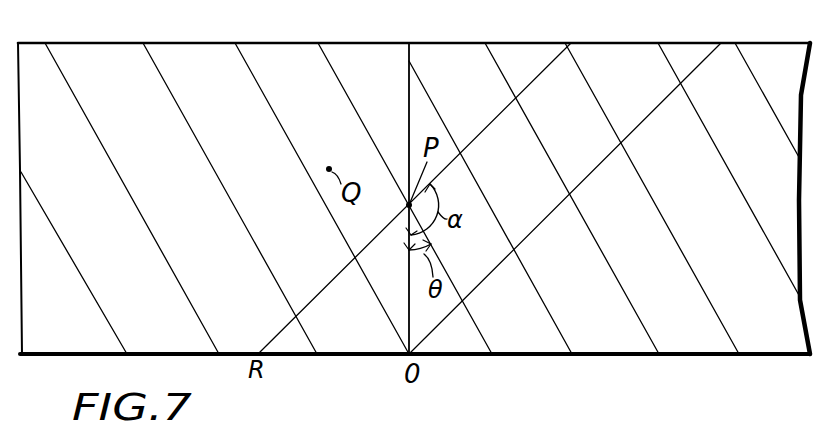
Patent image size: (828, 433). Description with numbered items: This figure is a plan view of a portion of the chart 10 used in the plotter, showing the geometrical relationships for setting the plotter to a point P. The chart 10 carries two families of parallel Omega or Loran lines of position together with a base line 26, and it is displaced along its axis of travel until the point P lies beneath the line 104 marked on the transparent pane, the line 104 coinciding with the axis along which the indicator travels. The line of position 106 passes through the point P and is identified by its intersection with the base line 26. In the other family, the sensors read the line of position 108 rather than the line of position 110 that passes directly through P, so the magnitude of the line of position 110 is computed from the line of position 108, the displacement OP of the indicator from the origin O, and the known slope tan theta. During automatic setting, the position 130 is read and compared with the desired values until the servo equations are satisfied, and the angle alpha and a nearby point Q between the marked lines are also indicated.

The chart 10 is at (508, 50).
The base line 26 is at (537, 356).
The line 104 is at (409, 83).
The line of position 106 is at (484, 134).
The line of position 108 is at (277, 116).
The line of position 110 is at (441, 261).
The position 130 is at (579, 184).